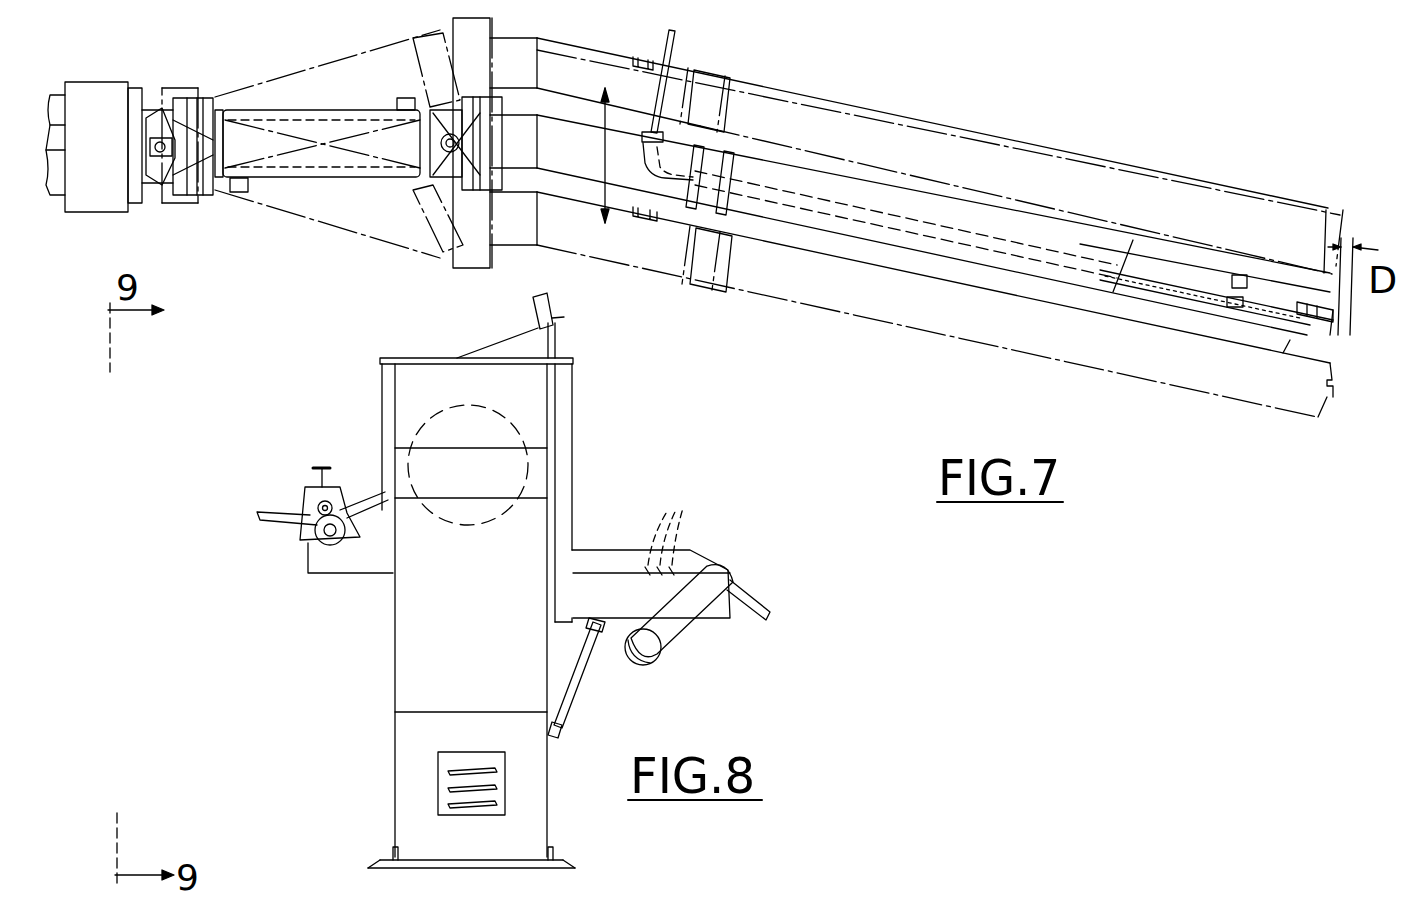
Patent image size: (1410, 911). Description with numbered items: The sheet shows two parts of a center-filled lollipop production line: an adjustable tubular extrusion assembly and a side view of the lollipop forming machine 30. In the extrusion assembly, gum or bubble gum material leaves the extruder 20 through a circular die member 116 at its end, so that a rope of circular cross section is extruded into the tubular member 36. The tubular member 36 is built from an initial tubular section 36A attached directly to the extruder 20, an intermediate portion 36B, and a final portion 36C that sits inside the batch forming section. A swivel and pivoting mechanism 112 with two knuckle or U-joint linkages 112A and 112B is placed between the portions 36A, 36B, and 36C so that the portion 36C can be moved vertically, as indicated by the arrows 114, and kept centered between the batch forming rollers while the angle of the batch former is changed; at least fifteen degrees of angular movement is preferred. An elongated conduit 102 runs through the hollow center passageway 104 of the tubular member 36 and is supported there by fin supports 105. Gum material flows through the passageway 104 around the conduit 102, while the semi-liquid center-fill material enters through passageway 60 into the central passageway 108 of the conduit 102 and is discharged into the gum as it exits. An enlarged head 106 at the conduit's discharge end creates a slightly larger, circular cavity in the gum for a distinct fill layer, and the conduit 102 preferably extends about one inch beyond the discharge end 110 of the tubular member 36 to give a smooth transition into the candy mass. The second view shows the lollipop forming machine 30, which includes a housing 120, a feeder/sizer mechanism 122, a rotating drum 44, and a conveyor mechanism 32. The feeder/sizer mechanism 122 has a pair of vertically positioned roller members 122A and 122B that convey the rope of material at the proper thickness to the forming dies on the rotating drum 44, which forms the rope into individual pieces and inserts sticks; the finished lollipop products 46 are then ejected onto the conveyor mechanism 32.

In FIG. 7, the extruder 20 is at (108, 87).
In FIG. 7, the circular die member 116 is at (140, 203).
In FIG. 7, the initial tubular section 36A is at (150, 113).
In FIG. 7, the swivel and pivoting mechanism 112 is at (200, 100).
In FIG. 7, the swivel/pivot linkage 112A is at (212, 197).
In FIG. 7, the intermediate tubular portion 36B is at (343, 110).
In FIG. 7, the swivel/pivot linkage 112B is at (440, 165).
In FIG. 7, the tubular member 36 is at (997, 210).
In FIG. 7, the tubular member portion 36C is at (880, 193).
In FIG. 7, the passageway 60 is at (677, 52).
In FIG. 7, the arrows 114 is at (603, 150).
In FIG. 7, the elongated conduit member 102 is at (1130, 293).
In FIG. 7, the hollow center passageway 104 is at (1157, 258).
In FIG. 7, the fin supports 105 is at (1240, 277).
In FIG. 7, the enlarged head 106 is at (1338, 307).
In FIG. 7, the central passageway 108 is at (1283, 353).
In FIG. 7, the discharge end 110 is at (1327, 333).
In FIG. 8, the housing 120 is at (395, 628).
In FIG. 8, the lollipop forming machine 30 is at (395, 752).
In FIG. 8, the rotating drum mechanism 44 is at (525, 433).
In FIG. 8, the lollipop products 46 is at (669, 528).
In FIG. 8, the conveyor mechanism 32 is at (655, 602).
In FIG. 8, the feeder/sizer mechanism 122 is at (340, 487).
In FIG. 8, the roller member 122A is at (310, 498).
In FIG. 8, the roller member 122B is at (323, 533).